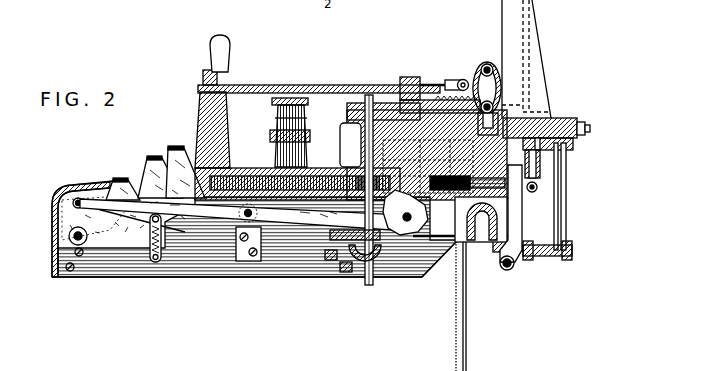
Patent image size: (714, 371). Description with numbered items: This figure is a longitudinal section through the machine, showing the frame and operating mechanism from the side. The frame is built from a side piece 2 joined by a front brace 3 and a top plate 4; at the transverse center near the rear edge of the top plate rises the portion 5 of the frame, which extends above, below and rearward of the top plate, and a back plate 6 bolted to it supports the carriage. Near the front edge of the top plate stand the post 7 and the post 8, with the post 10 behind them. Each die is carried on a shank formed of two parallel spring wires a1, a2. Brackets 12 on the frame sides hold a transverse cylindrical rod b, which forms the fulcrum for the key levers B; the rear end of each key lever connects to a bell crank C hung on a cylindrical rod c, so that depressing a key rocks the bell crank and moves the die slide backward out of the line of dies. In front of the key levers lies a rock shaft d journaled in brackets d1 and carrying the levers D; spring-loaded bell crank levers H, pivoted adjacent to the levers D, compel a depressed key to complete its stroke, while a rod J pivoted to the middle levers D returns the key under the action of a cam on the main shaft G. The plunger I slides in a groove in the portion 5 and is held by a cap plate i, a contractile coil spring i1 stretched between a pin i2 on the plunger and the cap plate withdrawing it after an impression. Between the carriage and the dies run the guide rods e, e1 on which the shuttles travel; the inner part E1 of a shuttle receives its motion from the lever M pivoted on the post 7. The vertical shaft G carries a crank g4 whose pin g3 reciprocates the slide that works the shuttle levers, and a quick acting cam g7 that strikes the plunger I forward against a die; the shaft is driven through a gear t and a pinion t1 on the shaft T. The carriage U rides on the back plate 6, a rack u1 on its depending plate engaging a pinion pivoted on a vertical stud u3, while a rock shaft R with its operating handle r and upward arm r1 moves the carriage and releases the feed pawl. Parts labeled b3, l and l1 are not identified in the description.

The side piece 2 is at (526, 59).
The front brace 3 is at (68, 197).
The top plate 4 is at (297, 172).
The portion of the frame 5 is at (427, 155).
The back plate 6 is at (508, 192).
The post 7 is at (467, 202).
The post 8 is at (204, 136).
The post 10 is at (302, 114).
The brackets 12 is at (250, 239).
The levers D is at (143, 218).
The rock shaft d is at (68, 238).
The brackets d1 is at (87, 273).
The bell crank levers H is at (156, 264).
The plunger I is at (195, 264).
The rod J is at (132, 222).
The key levers B is at (242, 215).
The transverse cylindrical rod b is at (252, 213).
The type bars b3 is at (170, 152).
The bell crank levers C is at (405, 212).
The cylindrical rod c is at (416, 219).
The main shaft G is at (368, 272).
The rock shaft R is at (452, 252).
The spring wire a1 is at (456, 313).
The spring wire a2 is at (467, 288).
The lever M is at (263, 85).
The operating handle r is at (216, 60).
The shaft T is at (292, 98).
The gear t is at (285, 186).
The pinion t1 is at (284, 137).
The pin g3 is at (413, 86).
The crank g4 is at (362, 112).
The quick acting cam g7 is at (360, 128).
The cap plate i is at (430, 97).
The rod l is at (437, 76).
The contractile coil spring i1 is at (454, 78).
The pin i2 is at (466, 80).
The inner part of shuttle E1 is at (492, 83).
The guide rod e is at (487, 65).
The guide rod e1 is at (492, 106).
The carriage U is at (549, 119).
The rack u1 is at (570, 142).
The vertical stud u3 is at (537, 163).
The ball joint l1 is at (537, 188).
The arm r1 is at (560, 200).